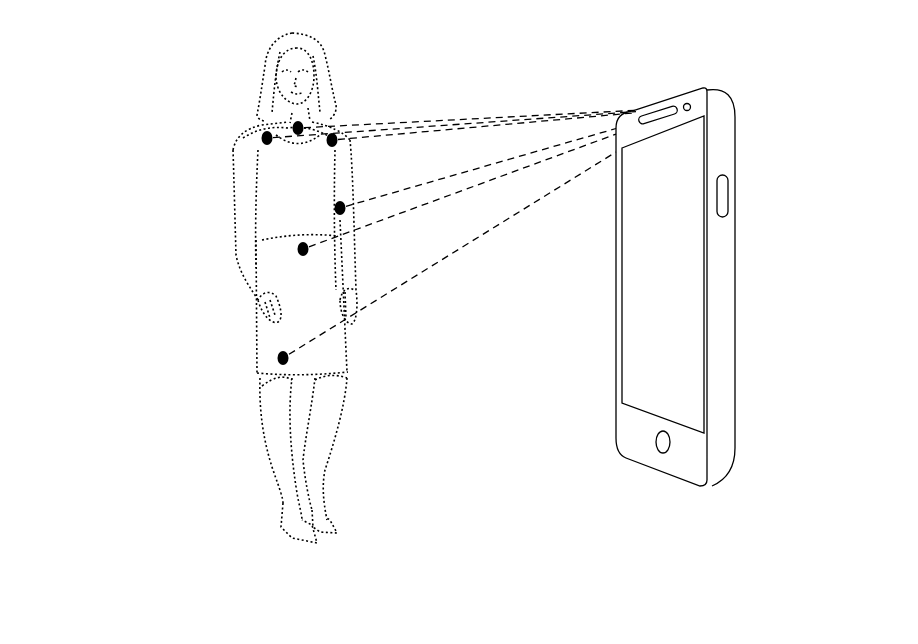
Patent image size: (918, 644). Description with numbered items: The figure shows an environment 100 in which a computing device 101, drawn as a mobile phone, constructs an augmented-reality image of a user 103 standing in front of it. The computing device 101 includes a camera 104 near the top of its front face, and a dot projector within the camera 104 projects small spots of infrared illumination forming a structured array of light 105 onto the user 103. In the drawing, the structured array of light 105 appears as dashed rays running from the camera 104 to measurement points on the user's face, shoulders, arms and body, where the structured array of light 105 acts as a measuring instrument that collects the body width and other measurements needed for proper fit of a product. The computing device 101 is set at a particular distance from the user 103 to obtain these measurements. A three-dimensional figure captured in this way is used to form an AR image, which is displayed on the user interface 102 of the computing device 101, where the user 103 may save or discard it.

The environment / system 100 is at (203, 31).
The computing device 101 is at (722, 150).
The user interface 102 is at (648, 297).
The user 103 is at (263, 140).
The camera 104 is at (686, 103).
The structured array of light 105 is at (282, 357).